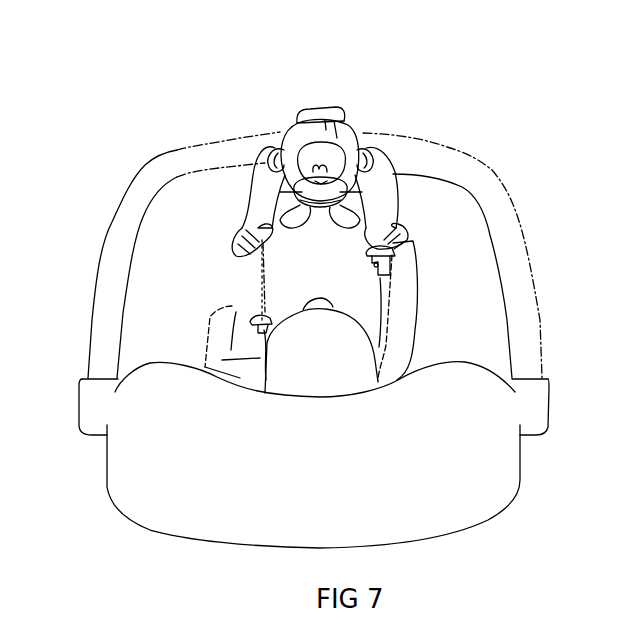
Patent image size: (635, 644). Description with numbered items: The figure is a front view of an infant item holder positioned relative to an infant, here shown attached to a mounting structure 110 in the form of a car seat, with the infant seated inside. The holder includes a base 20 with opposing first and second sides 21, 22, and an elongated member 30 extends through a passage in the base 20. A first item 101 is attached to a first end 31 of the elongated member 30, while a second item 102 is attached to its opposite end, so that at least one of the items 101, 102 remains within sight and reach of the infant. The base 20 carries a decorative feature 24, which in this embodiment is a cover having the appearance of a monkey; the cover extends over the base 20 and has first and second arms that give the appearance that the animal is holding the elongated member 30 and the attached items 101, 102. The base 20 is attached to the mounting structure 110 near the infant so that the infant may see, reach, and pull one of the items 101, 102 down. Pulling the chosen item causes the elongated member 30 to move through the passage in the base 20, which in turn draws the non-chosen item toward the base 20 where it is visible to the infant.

The mounting structure 110 is at (112, 253).
The first item 101 is at (257, 330).
The second item 102 is at (407, 238).
The base 20 is at (336, 139).
The first side 21 is at (247, 173).
The second side 22 is at (393, 175).
The decorative feature 24 is at (297, 120).
The elongated member 30 is at (260, 280).
The first end 31 is at (263, 317).